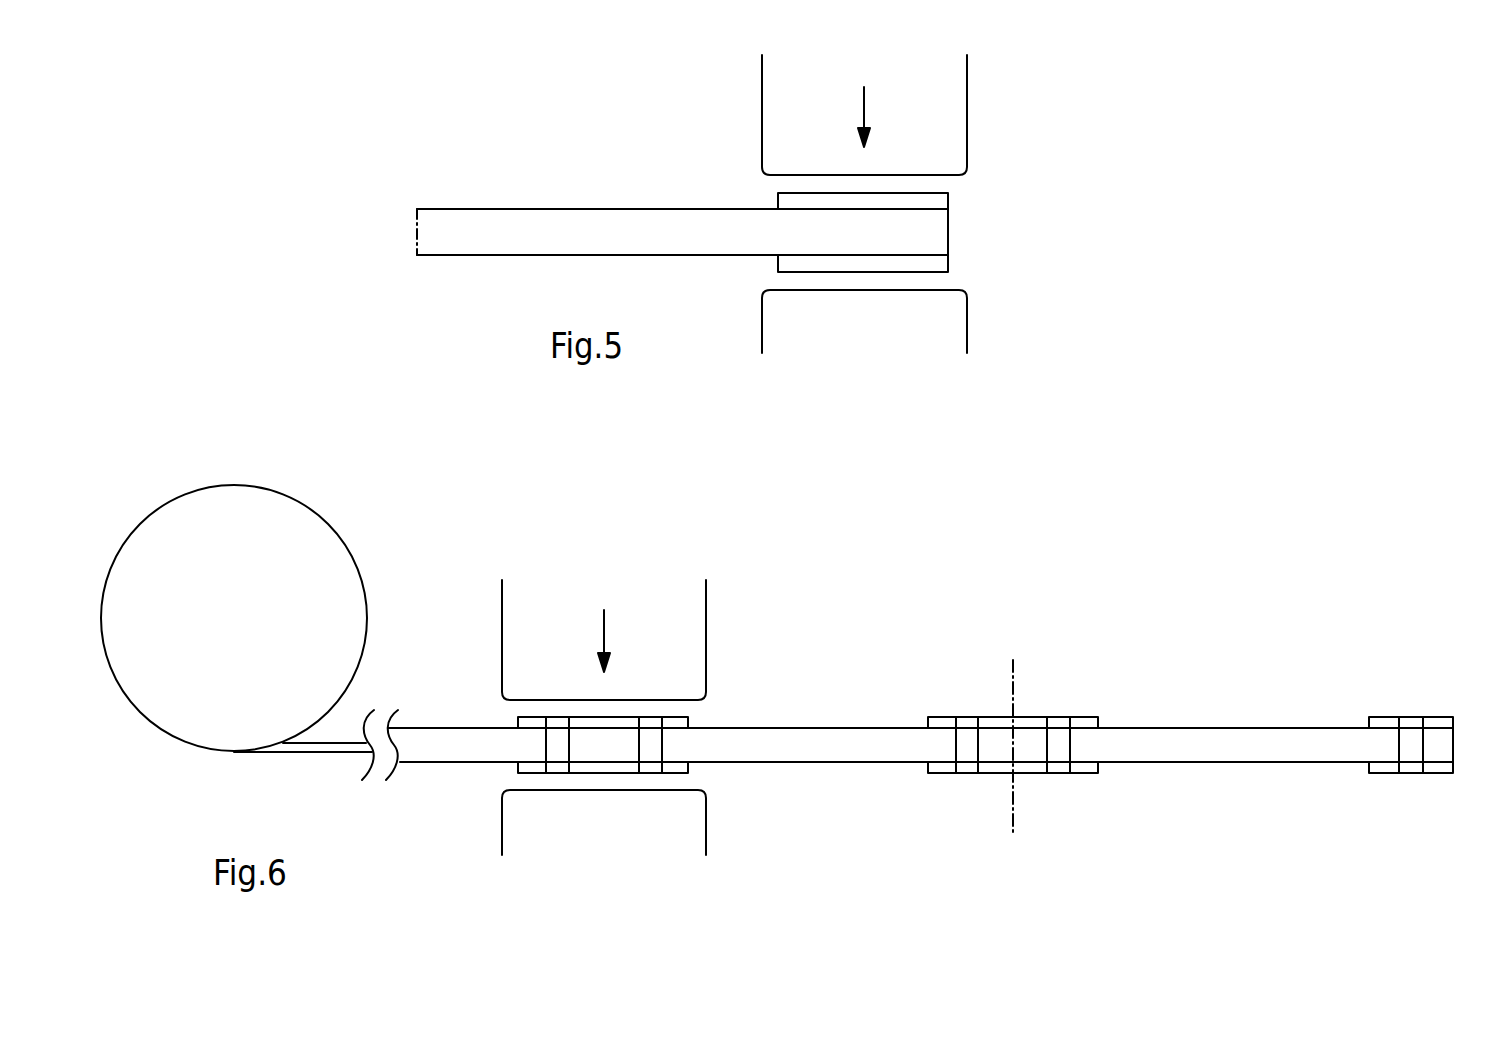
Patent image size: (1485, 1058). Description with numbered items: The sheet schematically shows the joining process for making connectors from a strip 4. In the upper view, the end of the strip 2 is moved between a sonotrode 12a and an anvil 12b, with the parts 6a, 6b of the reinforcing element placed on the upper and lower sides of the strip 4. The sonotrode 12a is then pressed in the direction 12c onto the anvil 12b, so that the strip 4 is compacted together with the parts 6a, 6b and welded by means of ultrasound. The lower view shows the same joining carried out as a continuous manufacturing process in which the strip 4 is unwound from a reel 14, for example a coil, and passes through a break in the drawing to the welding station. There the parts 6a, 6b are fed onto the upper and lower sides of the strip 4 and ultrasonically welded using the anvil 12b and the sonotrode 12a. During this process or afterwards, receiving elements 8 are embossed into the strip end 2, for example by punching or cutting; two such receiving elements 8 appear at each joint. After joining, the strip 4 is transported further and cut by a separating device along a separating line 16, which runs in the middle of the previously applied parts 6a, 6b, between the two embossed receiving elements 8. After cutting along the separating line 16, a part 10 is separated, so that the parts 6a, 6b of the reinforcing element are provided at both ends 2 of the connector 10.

In FIG. 5, the strip end 2 is at (729, 163).
In FIG. 6, the strip end 2 is at (471, 688).
In FIG. 5, the strip 4 is at (540, 226).
In FIG. 6, the strip 4 is at (425, 750).
In FIG. 5, the upper part of reinforcing element 6a is at (940, 202).
In FIG. 6, the upper part of reinforcing element 6a is at (682, 723).
In FIG. 5, the lower part of reinforcing element 6b is at (940, 265).
In FIG. 6, the lower part of reinforcing element 6b is at (682, 768).
In FIG. 6, the receiving element 8 is at (558, 773).
In FIG. 6, the connector 10 is at (1285, 666).
In FIG. 5, the sonotrode 12a is at (948, 97).
In FIG. 6, the sonotrode 12a is at (688, 620).
In FIG. 5, the anvil 12b is at (948, 325).
In FIG. 6, the anvil 12b is at (688, 830).
In FIG. 5, the pressing direction 12c is at (863, 107).
In FIG. 6, the reel 14 is at (328, 565).
In FIG. 6, the separating line 16 is at (1031, 656).